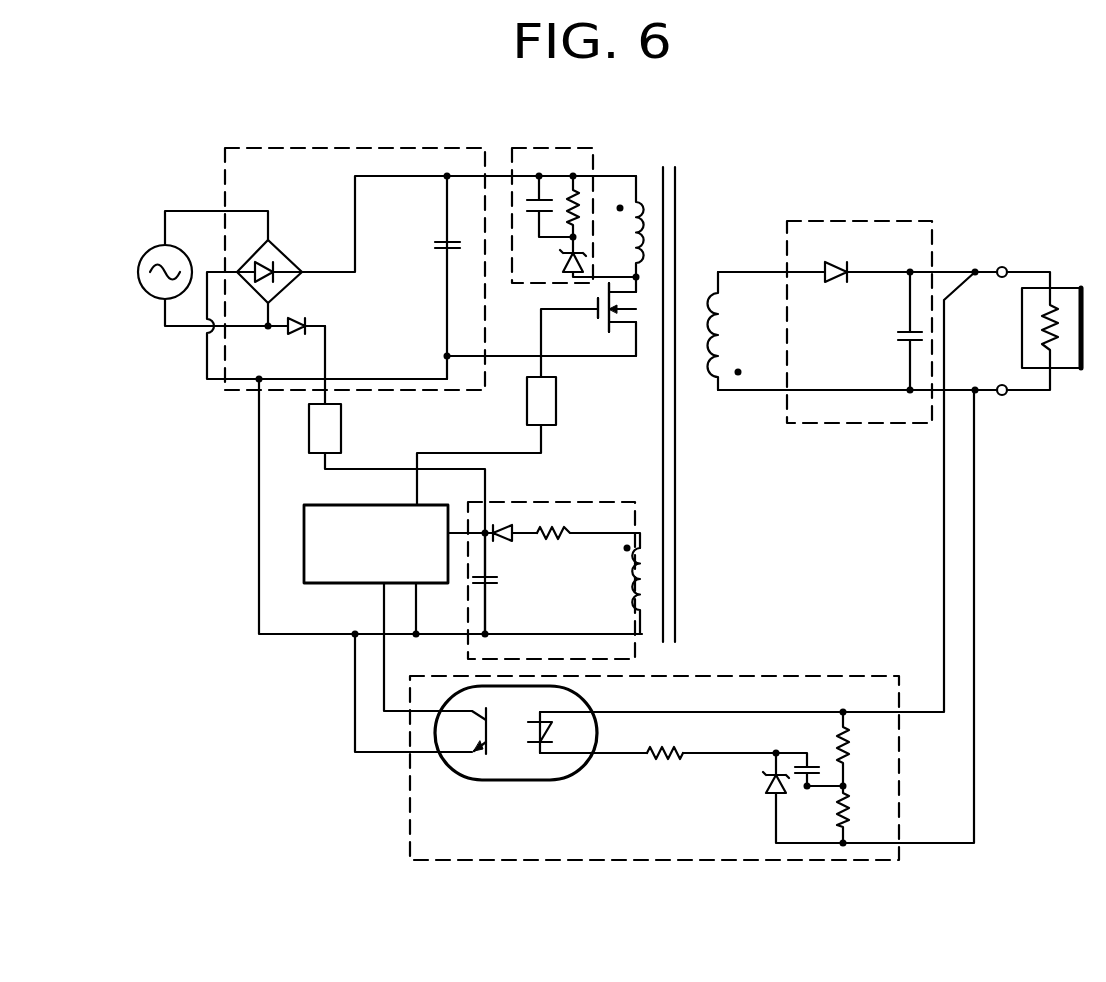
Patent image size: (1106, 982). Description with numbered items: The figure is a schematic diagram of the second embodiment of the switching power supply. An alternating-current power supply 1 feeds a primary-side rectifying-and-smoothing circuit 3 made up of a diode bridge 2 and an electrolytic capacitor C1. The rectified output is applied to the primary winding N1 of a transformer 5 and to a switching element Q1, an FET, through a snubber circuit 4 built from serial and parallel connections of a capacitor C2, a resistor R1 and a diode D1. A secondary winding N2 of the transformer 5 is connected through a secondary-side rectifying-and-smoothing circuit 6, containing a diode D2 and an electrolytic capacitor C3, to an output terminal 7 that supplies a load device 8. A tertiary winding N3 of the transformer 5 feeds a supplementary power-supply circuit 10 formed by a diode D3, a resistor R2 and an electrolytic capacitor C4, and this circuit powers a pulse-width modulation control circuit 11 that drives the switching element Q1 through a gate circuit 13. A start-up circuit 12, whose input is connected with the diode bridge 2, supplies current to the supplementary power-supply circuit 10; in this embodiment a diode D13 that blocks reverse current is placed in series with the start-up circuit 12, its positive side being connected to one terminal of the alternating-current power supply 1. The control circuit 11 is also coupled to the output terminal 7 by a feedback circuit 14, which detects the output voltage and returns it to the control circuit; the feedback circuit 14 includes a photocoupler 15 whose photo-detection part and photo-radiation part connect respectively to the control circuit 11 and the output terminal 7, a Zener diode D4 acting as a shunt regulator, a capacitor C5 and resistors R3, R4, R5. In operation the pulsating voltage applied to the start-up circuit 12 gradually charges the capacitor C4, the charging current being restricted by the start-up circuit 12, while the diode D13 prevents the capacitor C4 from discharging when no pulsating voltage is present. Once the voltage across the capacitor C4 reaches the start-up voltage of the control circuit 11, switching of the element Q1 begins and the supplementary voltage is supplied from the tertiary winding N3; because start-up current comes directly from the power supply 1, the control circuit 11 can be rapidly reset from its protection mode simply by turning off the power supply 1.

The alternating-current power supply 1 is at (150, 253).
The diode bridge 2 is at (282, 253).
The primary-side rectifying-and-smoothing circuit 3 is at (366, 148).
The snubber circuit 4 is at (540, 147).
The transformer 5 is at (677, 163).
The secondary-side rectifying-and-smoothing circuit 6 is at (886, 221).
The output terminal 7 is at (1000, 384).
The load device 8 is at (1065, 288).
The supplementary power-supply circuit 10 is at (642, 656).
The pulse-width modulation (PWM) control circuit 11 is at (322, 589).
The start-up circuit 12 is at (341, 428).
The gate circuit 13 is at (556, 400).
The feedback circuit 14 is at (408, 811).
The photocoupler 15 is at (512, 783).
The electrolytic capacitor C1 is at (431, 246).
The capacitor C2 is at (526, 206).
The electrolytic capacitor C3 is at (897, 338).
The electrolytic capacitor C4 is at (498, 583).
The capacitor C5 is at (815, 763).
The diode D1 is at (582, 257).
The diode D2 is at (831, 291).
The diode D3 is at (511, 549).
The Zener diode D4 is at (757, 776).
The diode D13 is at (306, 320).
The resistor R1 is at (580, 205).
The resistor R2 is at (588, 550).
The resistor R3 is at (862, 749).
The resistor R4 is at (862, 814).
The resistor R5 is at (665, 769).
The primary winding N1 is at (642, 173).
The secondary winding N2 is at (745, 271).
The tertiary winding N3 is at (648, 550).
The switching element Q1 is at (601, 316).